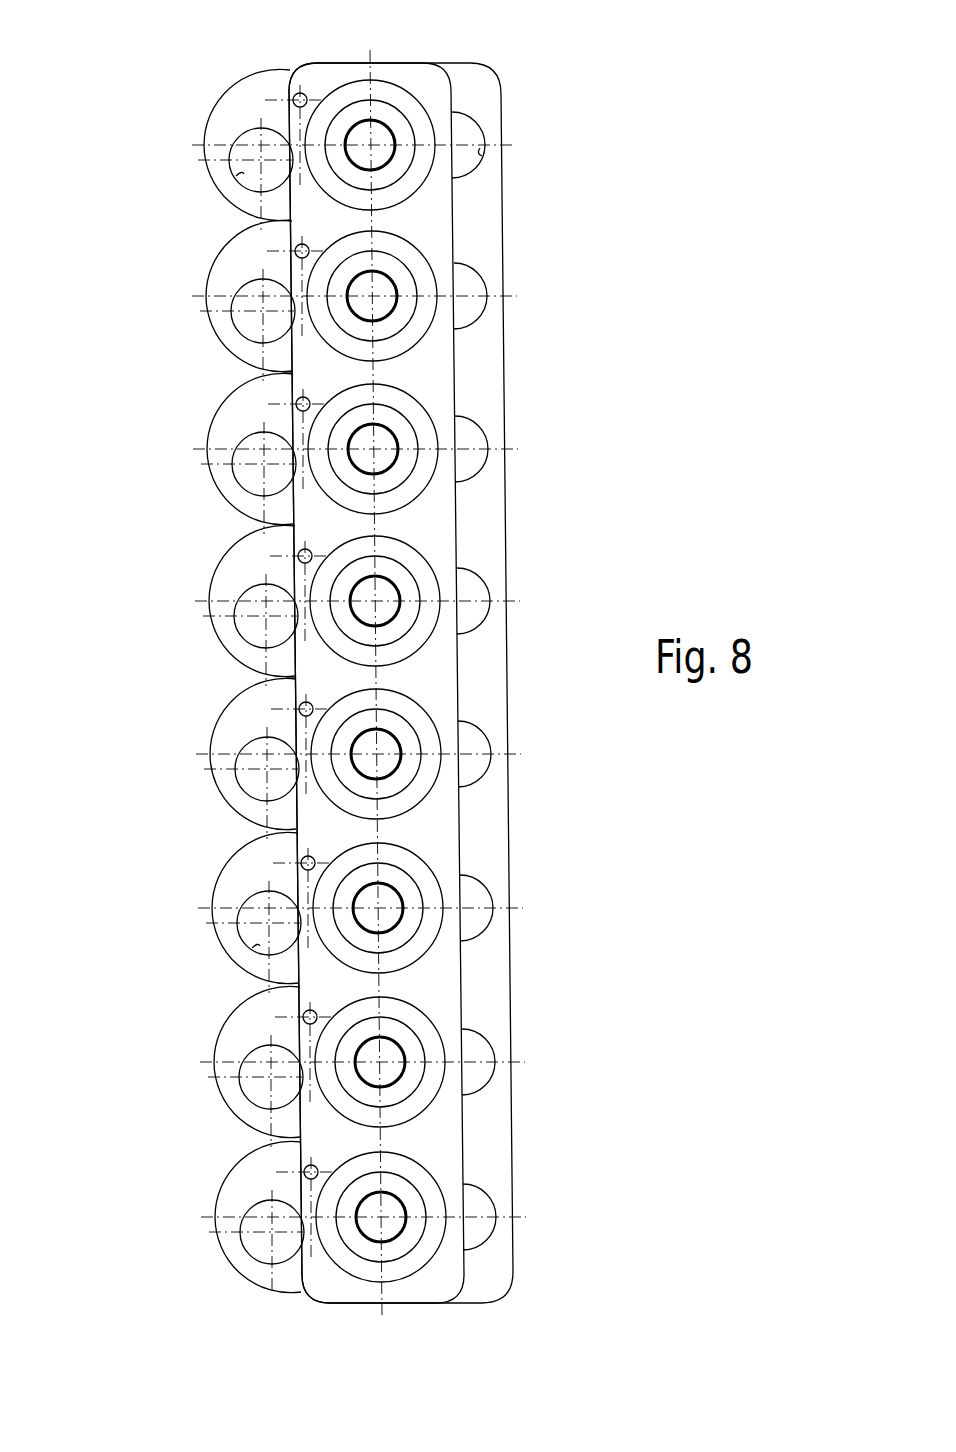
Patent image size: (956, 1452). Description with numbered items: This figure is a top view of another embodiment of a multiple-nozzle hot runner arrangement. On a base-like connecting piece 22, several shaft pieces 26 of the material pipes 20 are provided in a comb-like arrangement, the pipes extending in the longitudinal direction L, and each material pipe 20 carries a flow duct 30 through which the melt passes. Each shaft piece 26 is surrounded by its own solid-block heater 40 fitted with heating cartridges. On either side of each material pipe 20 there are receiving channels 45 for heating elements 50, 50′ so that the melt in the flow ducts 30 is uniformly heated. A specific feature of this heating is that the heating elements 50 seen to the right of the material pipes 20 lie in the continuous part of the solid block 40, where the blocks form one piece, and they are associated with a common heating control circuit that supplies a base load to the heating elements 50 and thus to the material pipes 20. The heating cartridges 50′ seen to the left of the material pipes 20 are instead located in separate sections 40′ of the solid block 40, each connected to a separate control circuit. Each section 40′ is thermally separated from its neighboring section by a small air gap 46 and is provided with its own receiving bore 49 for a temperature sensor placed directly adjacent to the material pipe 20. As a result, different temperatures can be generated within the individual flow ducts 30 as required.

The material pipe 20 is at (405, 466).
The connecting piece 22 is at (437, 220).
The shaft piece 26 is at (395, 422).
The flow duct 30 is at (393, 290).
The solid block 40 is at (493, 832).
The section of the solid block 40′ is at (183, 676).
The receiving channel 45 is at (343, 558).
The air gap 46 is at (183, 537).
The receiving bore 49 is at (192, 593).
The heating element 50 is at (472, 130).
The heating cartridge 50′ is at (185, 688).
The longitudinal direction L is at (205, 603).